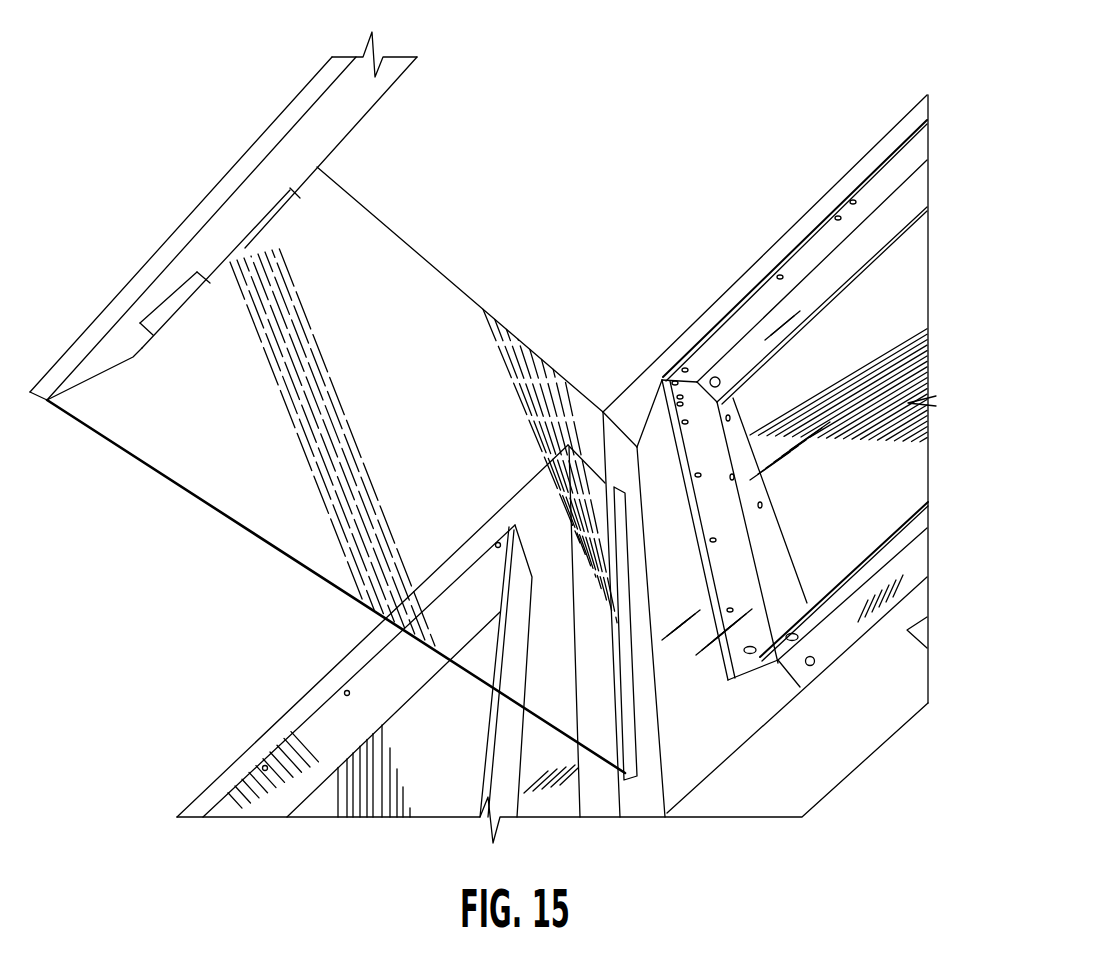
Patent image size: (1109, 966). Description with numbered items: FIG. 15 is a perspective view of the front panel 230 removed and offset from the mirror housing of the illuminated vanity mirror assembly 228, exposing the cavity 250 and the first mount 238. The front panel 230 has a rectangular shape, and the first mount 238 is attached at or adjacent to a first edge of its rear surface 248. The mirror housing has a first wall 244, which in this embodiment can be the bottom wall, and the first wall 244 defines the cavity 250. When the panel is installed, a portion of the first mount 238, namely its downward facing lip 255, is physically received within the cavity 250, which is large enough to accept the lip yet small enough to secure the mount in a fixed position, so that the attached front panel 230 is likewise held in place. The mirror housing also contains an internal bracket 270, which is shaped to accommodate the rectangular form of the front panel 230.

The illuminated vanity mirror assembly 228 is at (141, 178).
The front panel 230 is at (243, 153).
The rear surface 248 is at (340, 98).
The first mount 238 is at (293, 197).
The downward facing lip 255 is at (207, 287).
The internal bracket 270 is at (805, 257).
The cavity 250 is at (630, 662).
The first wall 244 is at (650, 747).